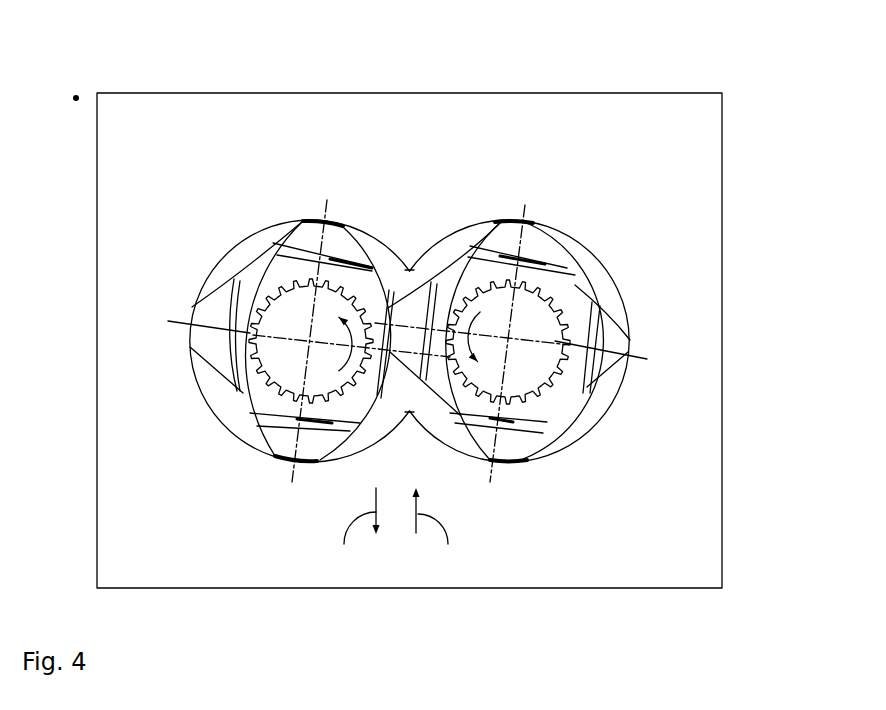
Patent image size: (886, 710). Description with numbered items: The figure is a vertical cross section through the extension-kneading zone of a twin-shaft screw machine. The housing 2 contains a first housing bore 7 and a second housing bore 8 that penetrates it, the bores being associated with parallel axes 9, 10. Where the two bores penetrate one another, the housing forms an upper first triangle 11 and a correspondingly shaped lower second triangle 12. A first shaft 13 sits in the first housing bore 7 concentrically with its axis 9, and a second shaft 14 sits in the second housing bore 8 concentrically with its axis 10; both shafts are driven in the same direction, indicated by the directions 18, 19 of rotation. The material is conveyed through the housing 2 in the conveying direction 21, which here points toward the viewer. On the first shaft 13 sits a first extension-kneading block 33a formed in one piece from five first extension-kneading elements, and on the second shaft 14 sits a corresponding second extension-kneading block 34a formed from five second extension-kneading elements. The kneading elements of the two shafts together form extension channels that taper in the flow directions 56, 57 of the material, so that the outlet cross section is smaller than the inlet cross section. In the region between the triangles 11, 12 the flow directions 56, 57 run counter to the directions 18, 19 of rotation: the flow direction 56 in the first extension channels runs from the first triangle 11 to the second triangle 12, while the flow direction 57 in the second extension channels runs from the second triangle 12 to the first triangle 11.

The housing 2 is at (449, 88).
The first housing bore 7 is at (270, 238).
The second housing bore 8 is at (565, 243).
The axis 9 is at (312, 344).
The axis 10 is at (509, 344).
The first triangle 11 is at (407, 262).
The second triangle 12 is at (410, 428).
The first shaft 13 is at (232, 331).
The second shaft 14 is at (575, 343).
The direction of rotation 18 is at (245, 325).
The direction of rotation 19 is at (520, 331).
The conveying direction 21 is at (74, 98).
The first extension-kneading block 33a is at (330, 210).
The second extension-kneading block 34a is at (531, 210).
The flow direction 56 is at (344, 545).
The flow direction 57 is at (448, 545).